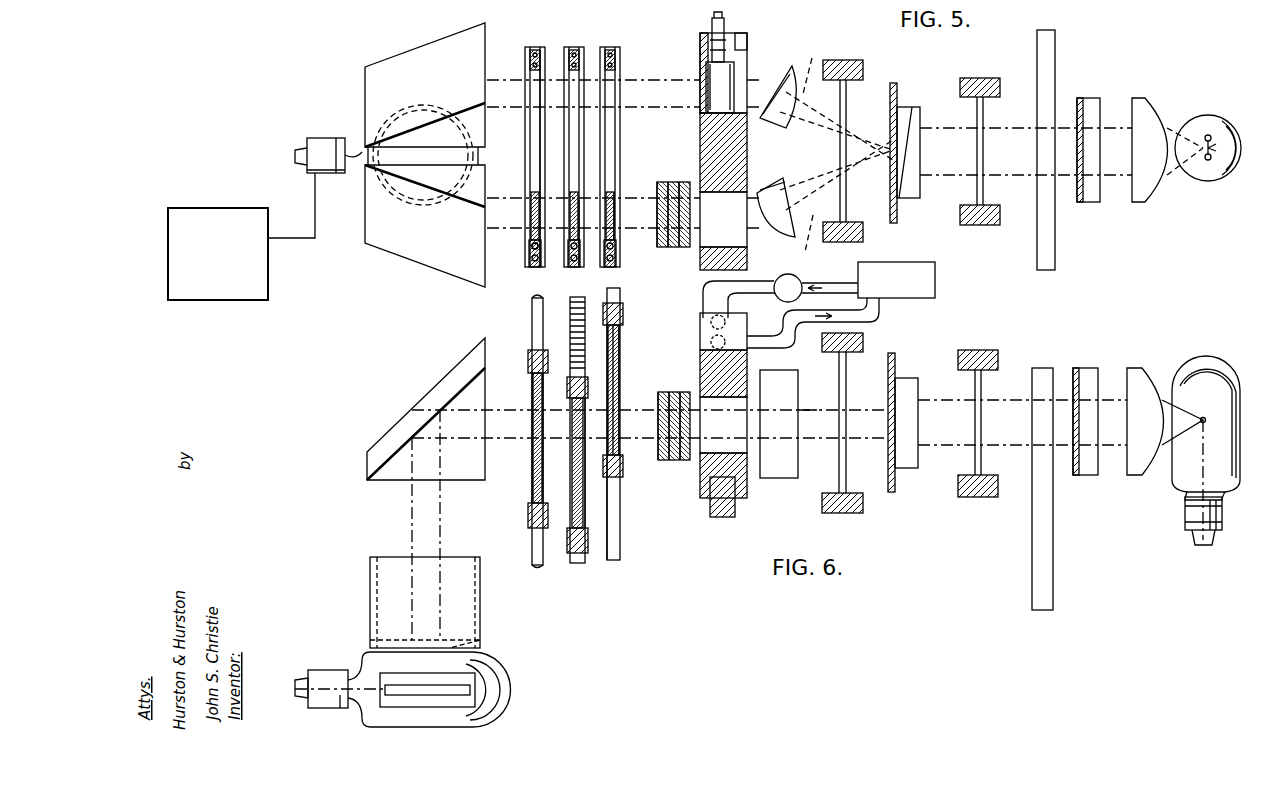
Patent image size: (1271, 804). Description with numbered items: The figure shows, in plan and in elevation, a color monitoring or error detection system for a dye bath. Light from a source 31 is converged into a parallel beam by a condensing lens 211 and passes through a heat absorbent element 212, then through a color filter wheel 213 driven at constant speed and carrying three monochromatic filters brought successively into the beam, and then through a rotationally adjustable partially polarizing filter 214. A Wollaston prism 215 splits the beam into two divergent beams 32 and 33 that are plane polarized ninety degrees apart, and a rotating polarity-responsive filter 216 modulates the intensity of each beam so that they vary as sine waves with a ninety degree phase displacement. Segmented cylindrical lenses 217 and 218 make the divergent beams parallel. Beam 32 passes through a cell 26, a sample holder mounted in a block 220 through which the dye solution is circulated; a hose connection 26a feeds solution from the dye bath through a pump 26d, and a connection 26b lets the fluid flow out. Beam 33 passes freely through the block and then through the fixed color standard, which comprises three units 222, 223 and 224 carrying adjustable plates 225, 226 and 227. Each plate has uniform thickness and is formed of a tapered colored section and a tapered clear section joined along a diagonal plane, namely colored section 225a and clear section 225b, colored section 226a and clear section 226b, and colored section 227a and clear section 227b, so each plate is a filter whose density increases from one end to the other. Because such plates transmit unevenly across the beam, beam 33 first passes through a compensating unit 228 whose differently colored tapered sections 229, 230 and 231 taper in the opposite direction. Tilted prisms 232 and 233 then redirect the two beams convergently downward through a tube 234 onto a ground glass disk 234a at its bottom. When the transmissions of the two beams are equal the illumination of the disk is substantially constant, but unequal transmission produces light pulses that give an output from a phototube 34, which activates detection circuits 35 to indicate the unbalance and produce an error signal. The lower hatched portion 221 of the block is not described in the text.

In FIG. 5, the cell 26 is at (706, 64).
In FIG. 6, the cell 26 is at (935, 290).
In FIG. 5, the hose connection 26a is at (724, 22).
In FIG. 6, the hose connection 26a is at (711, 322).
In FIG. 6, the connection 26b is at (711, 342).
In FIG. 6, the pump 26d is at (802, 284).
In FIG. 5, the source 31 is at (1228, 124).
In FIG. 6, the source 31 is at (1212, 358).
In FIG. 5, the light beam 32 is at (816, 67).
In FIG. 5, the light beam 33 is at (815, 240).
In FIG. 6, the light beam 33 is at (812, 410).
In FIG. 5, the phototube 34 is at (345, 135).
In FIG. 6, the phototube 34 is at (510, 670).
In FIG. 5, the detection circuits 35 is at (252, 292).
In FIG. 5, the condensing lens 211 is at (1158, 108).
In FIG. 6, the condensing lens 211 is at (1142, 368).
In FIG. 5, the heat absorbent element 212 is at (1090, 202).
In FIG. 6, the heat absorbent element 212 is at (1092, 368).
In FIG. 5, the color filter wheel 213 is at (1052, 67).
In FIG. 6, the color filter wheel 213 is at (1032, 520).
In FIG. 5, the partially polarizing filter 214 is at (983, 118).
In FIG. 6, the partially polarizing filter 214 is at (975, 458).
In FIG. 5, the Wollaston prism 215 is at (903, 107).
In FIG. 6, the Wollaston prism 215 is at (904, 378).
In FIG. 5, the rotating polarity-responsive filter 216 is at (846, 220).
In FIG. 6, the rotating polarity-responsive filter 216 is at (846, 482).
In FIG. 5, the segmented cylindrical lens 217 is at (775, 80).
In FIG. 5, the segmented cylindrical lens 218 is at (786, 188).
In FIG. 6, the segmented cylindrical lens 218 is at (785, 374).
In FIG. 5, the block 220 is at (700, 128).
In FIG. 6, the block 220 is at (745, 360).
In FIG. 5, the housing bottom 221 is at (747, 250).
In FIG. 6, the housing bottom 221 is at (740, 457).
In FIG. 5, the unit 222 is at (614, 40).
In FIG. 6, the unit 222 is at (640, 304).
In FIG. 5, the unit 223 is at (578, 40).
In FIG. 6, the unit 223 is at (570, 377).
In FIG. 5, the unit 224 is at (530, 40).
In FIG. 6, the unit 224 is at (528, 352).
In FIG. 5, the adjustable plate 225 is at (620, 245).
In FIG. 6, the adjustable plate 225 is at (620, 448).
In FIG. 5, the colored section 225a is at (620, 200).
In FIG. 6, the colored section 225a is at (619, 372).
In FIG. 5, the clear section 225b is at (612, 192).
In FIG. 6, the clear section 225b is at (619, 348).
In FIG. 5, the adjustable plate 226 is at (563, 240).
In FIG. 6, the adjustable plate 226 is at (582, 553).
In FIG. 5, the colored section 226a is at (584, 198).
In FIG. 6, the colored section 226a is at (603, 477).
In FIG. 6, the clear section 226b is at (563, 500).
In FIG. 5, the adjustable plate 227 is at (529, 240).
In FIG. 6, the adjustable plate 227 is at (532, 490).
In FIG. 5, the colored section 227a is at (546, 192).
In FIG. 6, the colored section 227a is at (533, 500).
In FIG. 5, the clear section 227b is at (531, 198).
In FIG. 6, the clear section 227b is at (533, 462).
In FIG. 5, the compensating unit 228 is at (670, 182).
In FIG. 6, the compensating unit 228 is at (674, 392).
In FIG. 5, the tapered colored section 229 is at (672, 247).
In FIG. 6, the tapered colored section 229 is at (672, 460).
In FIG. 5, the tapered colored section 230 is at (684, 247).
In FIG. 6, the tapered colored section 230 is at (680, 461).
In FIG. 5, the tapered colored section 231 is at (660, 247).
In FIG. 6, the tapered colored section 231 is at (662, 460).
In FIG. 5, the tilted prism 232 is at (420, 50).
In FIG. 5, the tilted prism 233 is at (365, 245).
In FIG. 6, the tilted prism 233 is at (412, 405).
In FIG. 5, the tube 234 is at (378, 192).
In FIG. 6, the tube 234 is at (370, 562).
In FIG. 6, the ground glass disk 234a is at (470, 635).